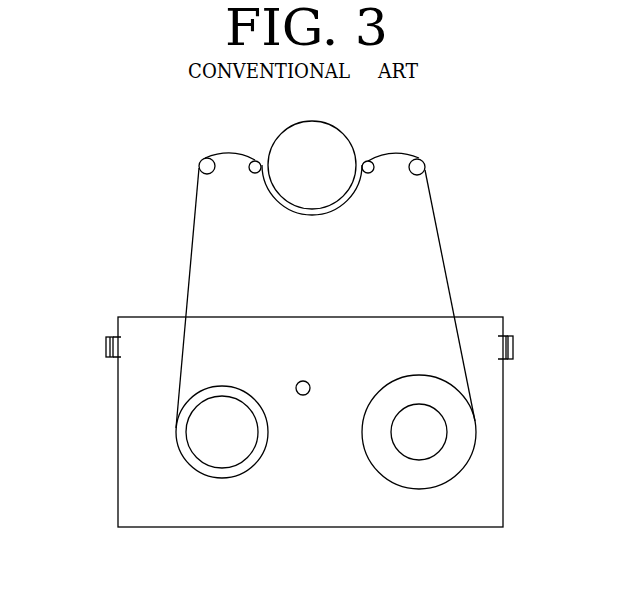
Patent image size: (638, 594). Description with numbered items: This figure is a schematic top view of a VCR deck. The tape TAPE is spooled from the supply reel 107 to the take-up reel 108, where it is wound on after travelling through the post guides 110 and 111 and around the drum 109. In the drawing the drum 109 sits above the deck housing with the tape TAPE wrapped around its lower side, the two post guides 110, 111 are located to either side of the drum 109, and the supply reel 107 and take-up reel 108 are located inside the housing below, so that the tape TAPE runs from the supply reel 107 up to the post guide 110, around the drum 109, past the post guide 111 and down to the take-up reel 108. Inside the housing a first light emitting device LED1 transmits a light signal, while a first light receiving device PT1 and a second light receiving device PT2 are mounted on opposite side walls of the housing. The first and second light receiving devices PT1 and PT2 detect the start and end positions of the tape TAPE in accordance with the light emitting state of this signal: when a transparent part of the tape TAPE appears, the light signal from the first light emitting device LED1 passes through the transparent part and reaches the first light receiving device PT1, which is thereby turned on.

The supply reel 107 is at (213, 455).
The take-up reel 108 is at (407, 448).
The drum 109 is at (350, 144).
The post guide 110 is at (198, 167).
The post guide 111 is at (426, 165).
The tape TAPE is at (190, 250).
The first light emitting device LED1 is at (311, 387).
The first light receiving device PT1 is at (513, 348).
The second light receiving device PT2 is at (106, 347).